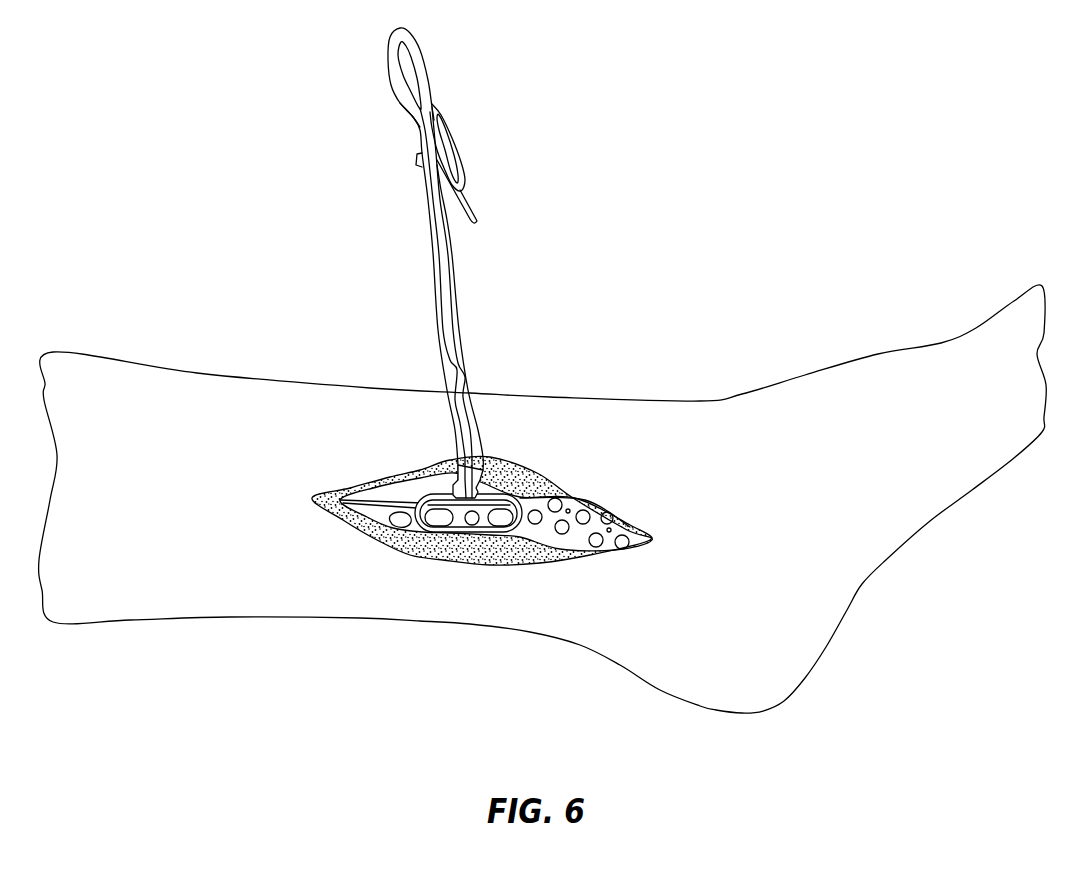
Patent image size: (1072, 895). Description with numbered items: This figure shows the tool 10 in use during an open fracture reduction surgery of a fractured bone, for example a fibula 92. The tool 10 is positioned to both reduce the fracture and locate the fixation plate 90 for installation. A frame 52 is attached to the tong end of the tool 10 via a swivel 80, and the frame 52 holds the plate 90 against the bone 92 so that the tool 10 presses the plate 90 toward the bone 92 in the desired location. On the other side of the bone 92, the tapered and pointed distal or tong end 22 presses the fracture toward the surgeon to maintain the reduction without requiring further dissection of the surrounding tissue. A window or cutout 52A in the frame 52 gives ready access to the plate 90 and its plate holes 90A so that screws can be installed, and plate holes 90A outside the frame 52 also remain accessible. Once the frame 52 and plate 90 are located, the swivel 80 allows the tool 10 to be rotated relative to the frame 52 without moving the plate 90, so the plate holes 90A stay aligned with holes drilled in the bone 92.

The tool 10 is at (494, 263).
The distal or tong end 22 is at (496, 480).
The frame or cutout 52 is at (501, 561).
The window or cutout 52A is at (455, 505).
The swivel 80 is at (470, 489).
The plate 90 is at (617, 528).
The plate holes 90A is at (470, 530).
The bone (fibula) 92 is at (397, 503).